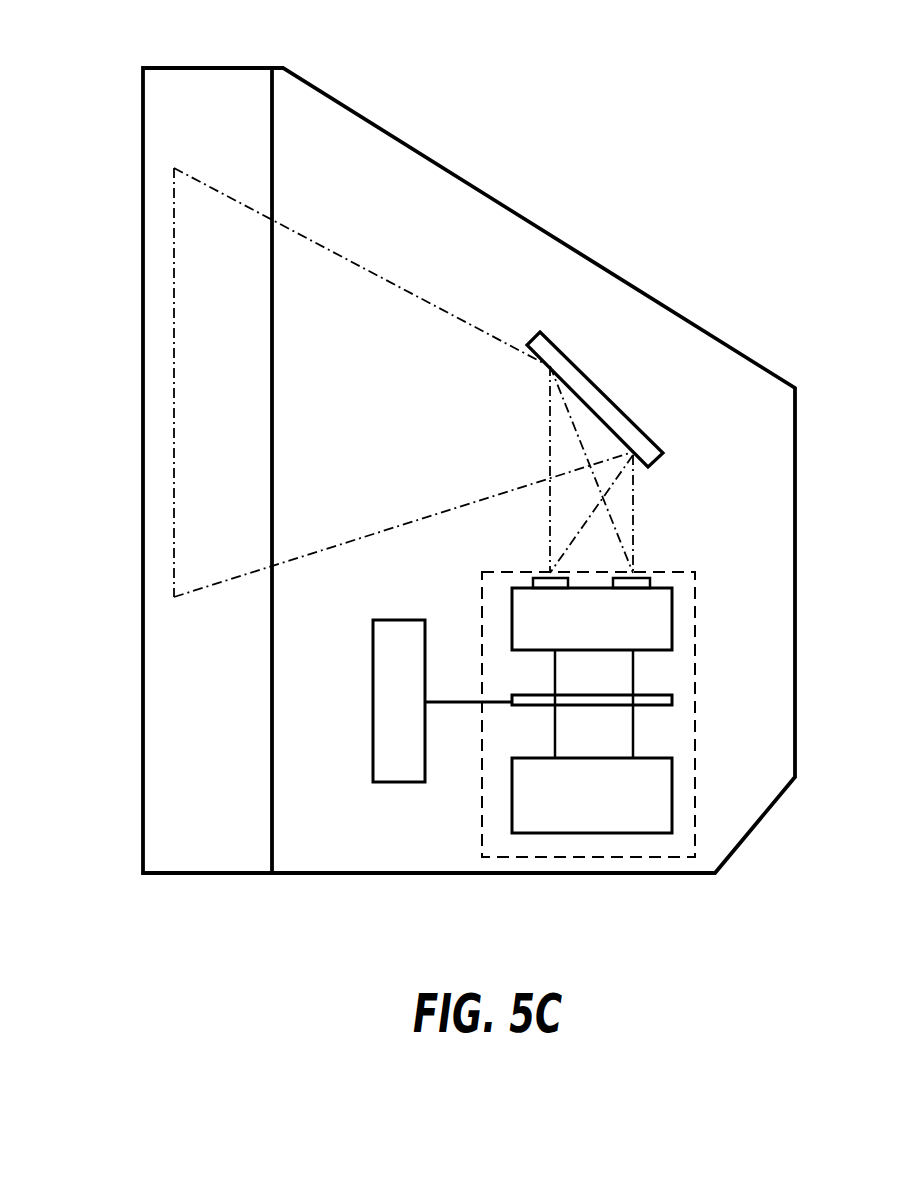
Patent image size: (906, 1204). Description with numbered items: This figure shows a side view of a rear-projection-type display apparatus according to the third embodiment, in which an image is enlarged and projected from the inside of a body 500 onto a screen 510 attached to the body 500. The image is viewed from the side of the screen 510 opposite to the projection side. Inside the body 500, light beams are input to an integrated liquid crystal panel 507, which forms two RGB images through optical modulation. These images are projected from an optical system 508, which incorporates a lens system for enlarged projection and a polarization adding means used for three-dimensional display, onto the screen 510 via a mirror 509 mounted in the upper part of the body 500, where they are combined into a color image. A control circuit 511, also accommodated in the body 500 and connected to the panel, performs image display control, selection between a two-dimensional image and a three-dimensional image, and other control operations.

The body 500 is at (222, 863).
The integrated liquid crystal panel 507 is at (648, 678).
The optical system 508 is at (648, 607).
The mirror 509 is at (620, 399).
The screen 510 is at (106, 307).
The control circuit 511 is at (398, 726).